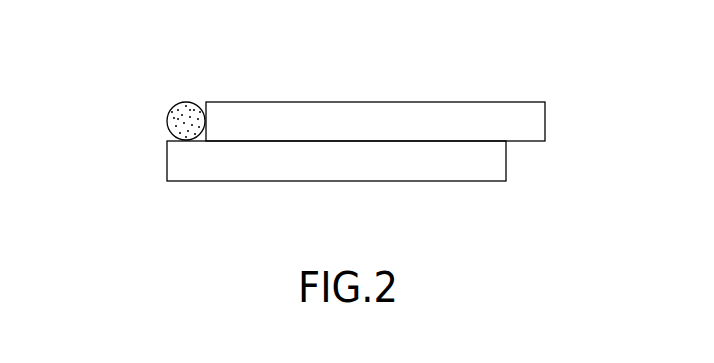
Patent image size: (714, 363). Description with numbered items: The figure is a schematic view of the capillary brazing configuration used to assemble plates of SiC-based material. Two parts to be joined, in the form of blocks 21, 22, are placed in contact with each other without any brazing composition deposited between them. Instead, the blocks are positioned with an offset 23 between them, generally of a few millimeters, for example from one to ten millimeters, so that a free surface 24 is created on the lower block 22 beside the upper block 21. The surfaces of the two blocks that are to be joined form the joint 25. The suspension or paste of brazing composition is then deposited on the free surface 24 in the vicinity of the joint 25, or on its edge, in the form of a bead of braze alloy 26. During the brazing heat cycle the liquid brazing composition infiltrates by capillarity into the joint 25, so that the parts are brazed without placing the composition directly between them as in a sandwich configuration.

The block 21 is at (530, 123).
The block 22 is at (438, 171).
The offset 23 is at (543, 195).
The free surface 24 is at (187, 141).
The joint 25 is at (267, 138).
The bead of braze alloy 26 is at (166, 113).